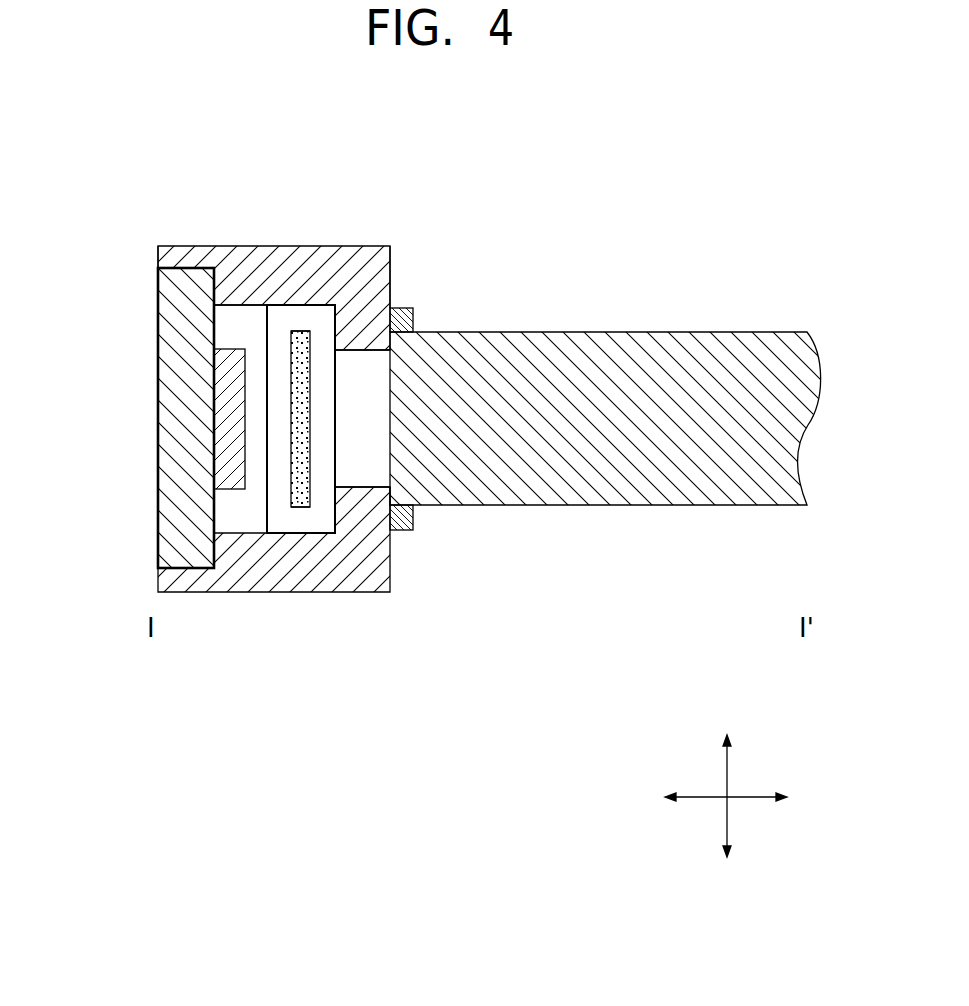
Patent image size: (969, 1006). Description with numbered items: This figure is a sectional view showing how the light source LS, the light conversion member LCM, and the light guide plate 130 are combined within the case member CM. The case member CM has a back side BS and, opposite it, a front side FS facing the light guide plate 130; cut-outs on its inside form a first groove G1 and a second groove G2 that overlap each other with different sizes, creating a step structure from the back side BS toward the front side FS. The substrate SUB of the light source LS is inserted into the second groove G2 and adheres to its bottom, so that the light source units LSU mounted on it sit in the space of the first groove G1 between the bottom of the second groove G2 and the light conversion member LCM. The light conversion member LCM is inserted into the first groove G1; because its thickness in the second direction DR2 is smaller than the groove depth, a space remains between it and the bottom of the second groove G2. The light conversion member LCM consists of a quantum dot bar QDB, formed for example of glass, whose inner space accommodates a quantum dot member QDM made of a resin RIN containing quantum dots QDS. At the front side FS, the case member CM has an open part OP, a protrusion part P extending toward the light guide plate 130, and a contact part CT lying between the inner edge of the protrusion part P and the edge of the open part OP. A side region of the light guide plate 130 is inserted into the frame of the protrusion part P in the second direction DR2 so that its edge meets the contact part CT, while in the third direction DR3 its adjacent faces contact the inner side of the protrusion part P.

The case member CM is at (290, 262).
The back side BS is at (158, 256).
The front side FS is at (390, 282).
The light source LS is at (138, 418).
The substrate SUB is at (172, 383).
The light source unit LSU is at (227, 447).
The first groove G1 is at (240, 305).
The second groove G2 is at (187, 568).
The light conversion member LCM is at (327, 519).
The quantum dot bar QDB is at (277, 517).
The quantum dot member QDM is at (341, 512).
The quantum dots QDS is at (303, 510).
The resin RIN is at (313, 533).
The protrusion part P is at (403, 308).
The light guide plate 130 is at (640, 352).
The contact part CT is at (393, 493).
The open part OP is at (367, 445).
The third direction DR3 is at (726, 782).
The second direction DR2 is at (746, 797).